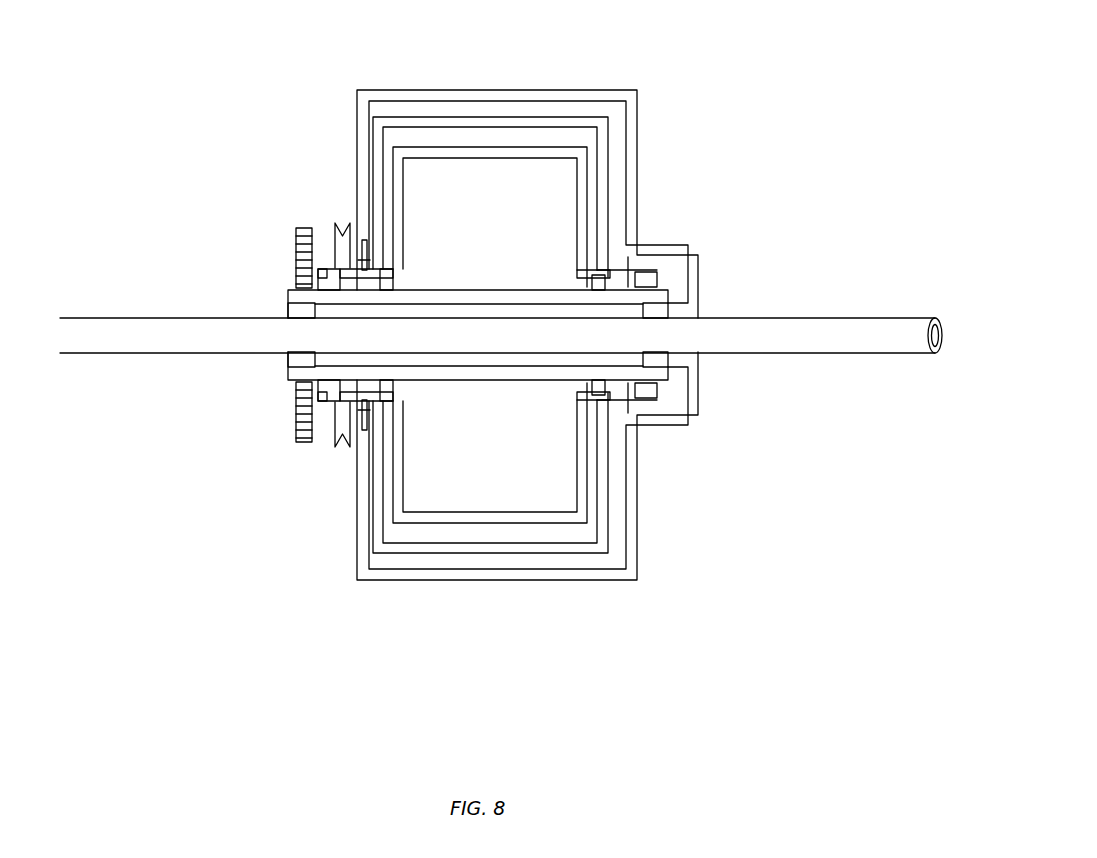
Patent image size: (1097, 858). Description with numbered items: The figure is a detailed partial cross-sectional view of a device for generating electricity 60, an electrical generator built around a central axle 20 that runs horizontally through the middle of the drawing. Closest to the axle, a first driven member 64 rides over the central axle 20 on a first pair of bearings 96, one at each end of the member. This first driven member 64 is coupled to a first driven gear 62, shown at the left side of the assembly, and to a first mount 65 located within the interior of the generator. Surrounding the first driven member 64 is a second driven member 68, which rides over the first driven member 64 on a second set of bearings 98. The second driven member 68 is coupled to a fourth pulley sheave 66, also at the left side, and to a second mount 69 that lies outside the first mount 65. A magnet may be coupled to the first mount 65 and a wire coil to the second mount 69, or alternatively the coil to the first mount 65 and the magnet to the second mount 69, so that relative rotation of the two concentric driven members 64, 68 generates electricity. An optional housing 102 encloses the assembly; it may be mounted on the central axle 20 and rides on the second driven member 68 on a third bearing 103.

The device for generating electricity 60 is at (772, 60).
The central axle 20 is at (815, 318).
The first driven gear 62 is at (296, 252).
The first driven member 64 is at (628, 293).
The first mount 65 is at (510, 155).
The fourth pulley sheave 66 is at (343, 232).
The second driven member 68 is at (385, 275).
The second mount 69 is at (425, 125).
The first pair of bearings 96 is at (288, 306).
The second set of bearings 98 is at (322, 270).
The housing 102 is at (637, 127).
The third bearing 103 is at (363, 258).